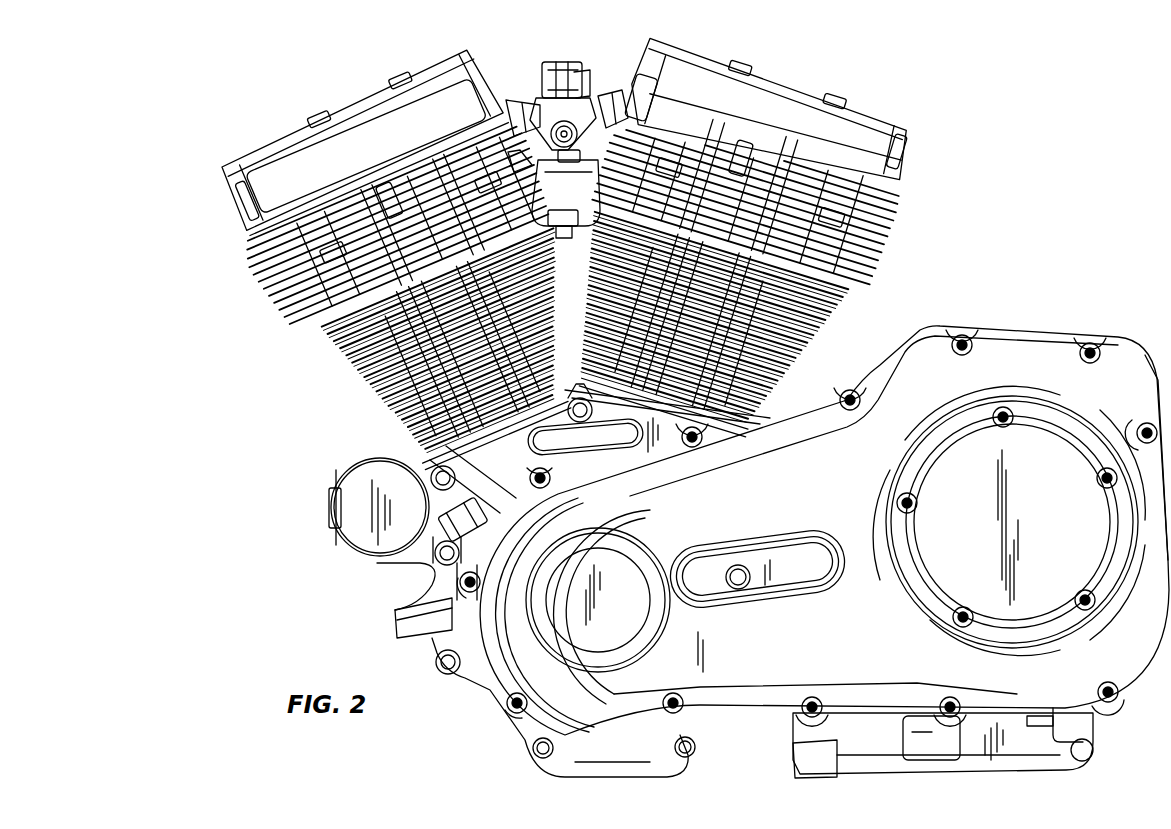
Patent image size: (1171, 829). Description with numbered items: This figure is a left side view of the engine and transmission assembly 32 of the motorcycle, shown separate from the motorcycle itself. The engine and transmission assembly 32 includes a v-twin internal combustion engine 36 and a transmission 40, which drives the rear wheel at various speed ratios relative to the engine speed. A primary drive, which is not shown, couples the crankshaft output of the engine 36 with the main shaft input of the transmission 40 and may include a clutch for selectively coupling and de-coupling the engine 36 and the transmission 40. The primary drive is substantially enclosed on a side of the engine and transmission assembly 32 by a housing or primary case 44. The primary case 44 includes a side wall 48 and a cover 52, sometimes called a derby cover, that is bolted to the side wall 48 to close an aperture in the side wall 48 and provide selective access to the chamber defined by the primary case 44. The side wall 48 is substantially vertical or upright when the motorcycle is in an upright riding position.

The engine and transmission assembly 32 is at (635, 267).
The v-twin internal combustion engine 36 is at (960, 223).
The transmission 40 is at (966, 172).
The primary case 44 is at (760, 670).
The side wall 48 is at (813, 530).
The cover 52 is at (1057, 531).